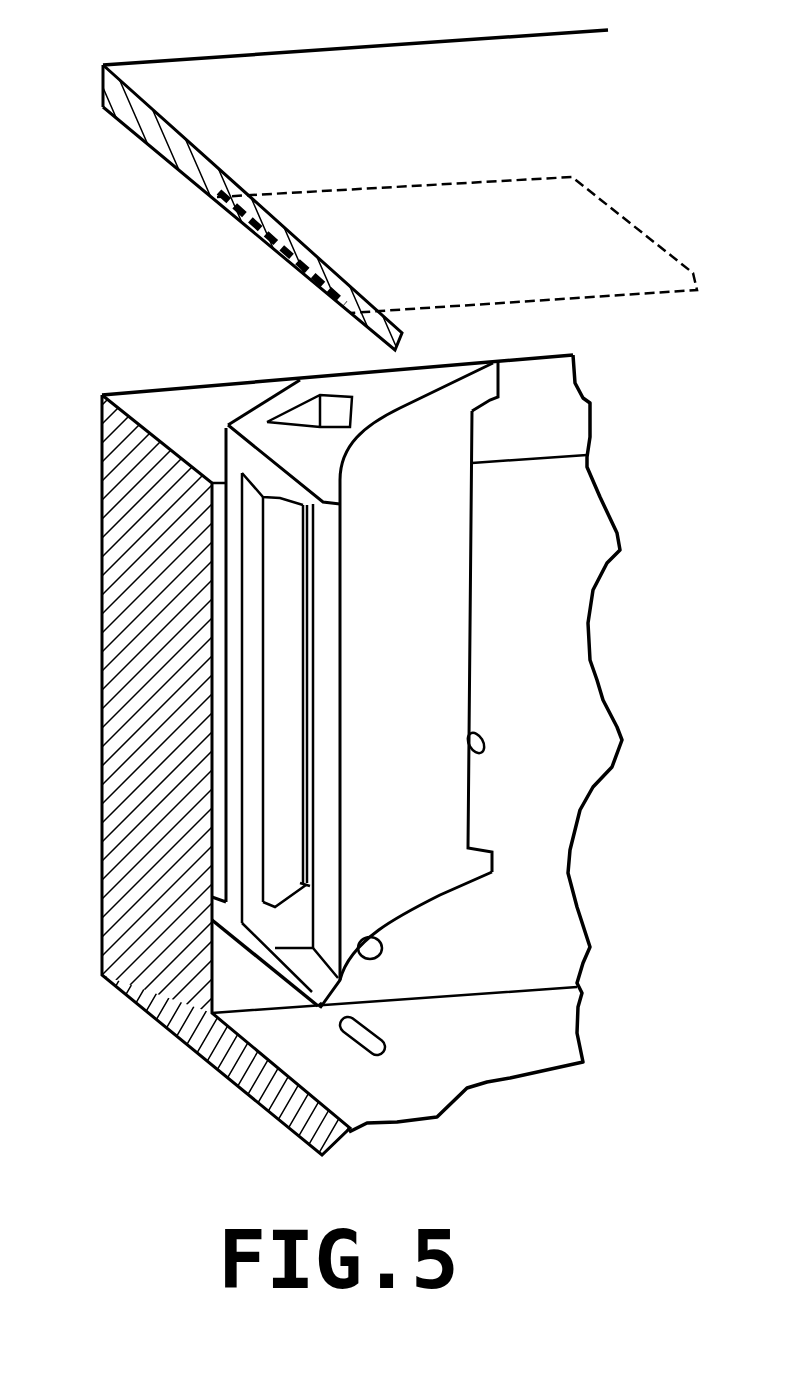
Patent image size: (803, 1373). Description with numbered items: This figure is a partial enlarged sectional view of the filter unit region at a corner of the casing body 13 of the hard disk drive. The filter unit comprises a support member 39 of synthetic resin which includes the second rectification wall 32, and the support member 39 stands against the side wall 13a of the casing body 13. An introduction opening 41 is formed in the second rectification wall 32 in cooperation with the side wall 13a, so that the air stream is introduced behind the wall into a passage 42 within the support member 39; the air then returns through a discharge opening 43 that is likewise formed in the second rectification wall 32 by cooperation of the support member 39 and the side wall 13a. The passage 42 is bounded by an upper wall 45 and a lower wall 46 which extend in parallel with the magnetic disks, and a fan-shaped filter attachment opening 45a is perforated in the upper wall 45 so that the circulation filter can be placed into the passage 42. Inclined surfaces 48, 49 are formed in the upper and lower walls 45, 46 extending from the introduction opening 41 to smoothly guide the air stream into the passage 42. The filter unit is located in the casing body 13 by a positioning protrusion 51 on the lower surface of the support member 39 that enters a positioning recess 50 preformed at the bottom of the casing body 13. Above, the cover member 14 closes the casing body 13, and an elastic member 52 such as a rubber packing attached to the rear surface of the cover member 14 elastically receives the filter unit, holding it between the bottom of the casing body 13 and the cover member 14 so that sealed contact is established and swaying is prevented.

The casing body 13 is at (101, 745).
The side wall 13a is at (567, 555).
The cover member 14 is at (327, 63).
The second rectification wall 32 is at (446, 695).
The support member 39 is at (472, 643).
The introduction opening 41 is at (345, 906).
The passage 42 is at (300, 945).
The discharge opening 43 is at (470, 751).
The upper wall 45 is at (355, 632).
The filter attachment opening 45a is at (303, 424).
The lower wall 46 is at (240, 940).
The inclined surface 48 is at (293, 505).
The inclined surface 49 is at (322, 995).
The positioning recess 50 is at (363, 1044).
The positioning protrusion 51 is at (382, 948).
The elastic member 52 is at (248, 240).